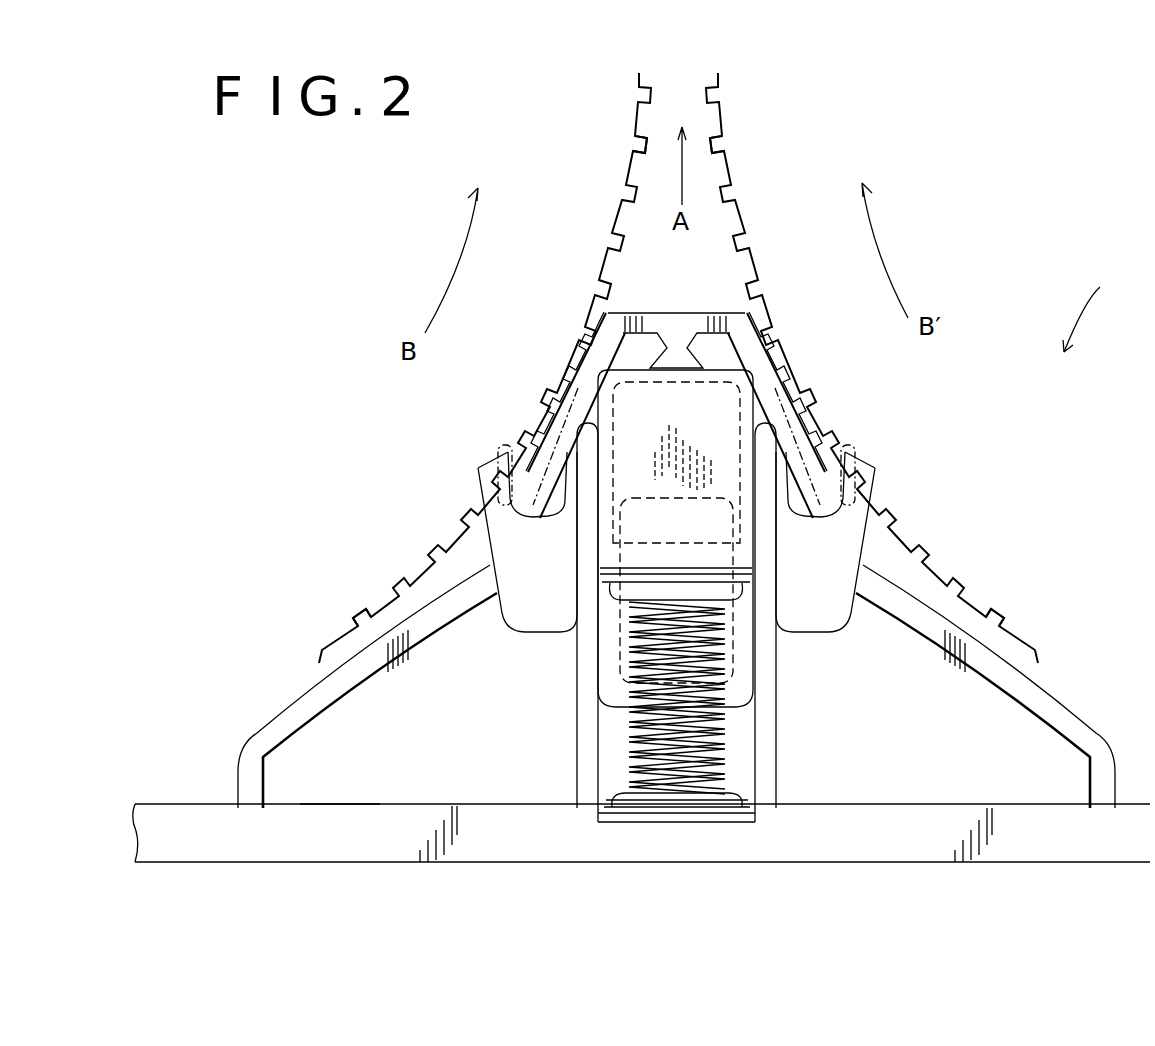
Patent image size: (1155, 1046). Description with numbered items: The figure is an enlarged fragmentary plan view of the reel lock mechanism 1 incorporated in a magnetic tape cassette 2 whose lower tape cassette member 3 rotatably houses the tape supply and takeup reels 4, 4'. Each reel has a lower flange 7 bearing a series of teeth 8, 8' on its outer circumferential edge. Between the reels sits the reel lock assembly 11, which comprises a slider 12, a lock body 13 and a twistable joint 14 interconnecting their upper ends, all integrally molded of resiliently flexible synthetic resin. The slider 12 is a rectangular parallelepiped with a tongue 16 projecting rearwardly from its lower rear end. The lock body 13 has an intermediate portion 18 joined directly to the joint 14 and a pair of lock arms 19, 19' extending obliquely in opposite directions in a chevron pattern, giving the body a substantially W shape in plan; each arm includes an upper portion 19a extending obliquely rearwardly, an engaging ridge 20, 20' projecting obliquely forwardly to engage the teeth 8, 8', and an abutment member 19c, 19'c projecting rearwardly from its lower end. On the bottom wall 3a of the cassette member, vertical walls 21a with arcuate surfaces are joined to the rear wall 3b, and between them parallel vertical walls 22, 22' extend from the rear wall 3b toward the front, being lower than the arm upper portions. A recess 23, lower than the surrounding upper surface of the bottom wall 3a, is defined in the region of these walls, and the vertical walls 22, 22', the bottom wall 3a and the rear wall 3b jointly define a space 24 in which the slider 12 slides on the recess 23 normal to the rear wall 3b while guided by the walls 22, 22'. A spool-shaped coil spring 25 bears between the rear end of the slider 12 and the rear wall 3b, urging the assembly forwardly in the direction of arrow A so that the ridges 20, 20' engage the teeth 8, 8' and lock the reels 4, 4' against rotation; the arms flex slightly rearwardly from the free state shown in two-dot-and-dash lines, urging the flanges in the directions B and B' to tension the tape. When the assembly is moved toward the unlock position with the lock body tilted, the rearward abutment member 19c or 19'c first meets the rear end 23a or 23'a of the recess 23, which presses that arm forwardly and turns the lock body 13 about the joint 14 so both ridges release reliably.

The reel lock mechanism 1 is at (1123, 297).
The magnetic tape cassette 2 is at (1007, 866).
The lower tape cassette member 3 is at (1068, 850).
The bottom wall 3a is at (342, 793).
The rear wall 3b is at (450, 845).
The tape supply reel 4 is at (493, 361).
The tape takeup reel 4' is at (869, 361).
The lower reel flange 7 is at (1025, 632).
The teeth 8 is at (509, 434).
The teeth 8' is at (852, 437).
The reel lock assembly 11 is at (780, 560).
The slider 12 is at (747, 555).
The lock body 13 is at (666, 315).
The twistable joint 14 is at (680, 360).
The tongue 16 is at (602, 685).
The intermediate portion 18 is at (692, 318).
The lock arm 19 is at (571, 415).
The lock arm 19' is at (790, 415).
The upper portion 19a is at (796, 398).
The abutment member 19c is at (520, 530).
The abutment member 19'c is at (818, 514).
The engaging ridge 20 is at (504, 446).
The engaging ridge 20' is at (862, 446).
The vertical wall 21a is at (1050, 727).
The vertical wall 22 is at (555, 622).
The vertical wall 22' is at (809, 622).
The recess 23 is at (781, 609).
The rear end of recess 23a is at (537, 632).
The rear end of recess 23'a is at (828, 595).
The space 24 is at (545, 775).
The coil spring 25 is at (724, 758).